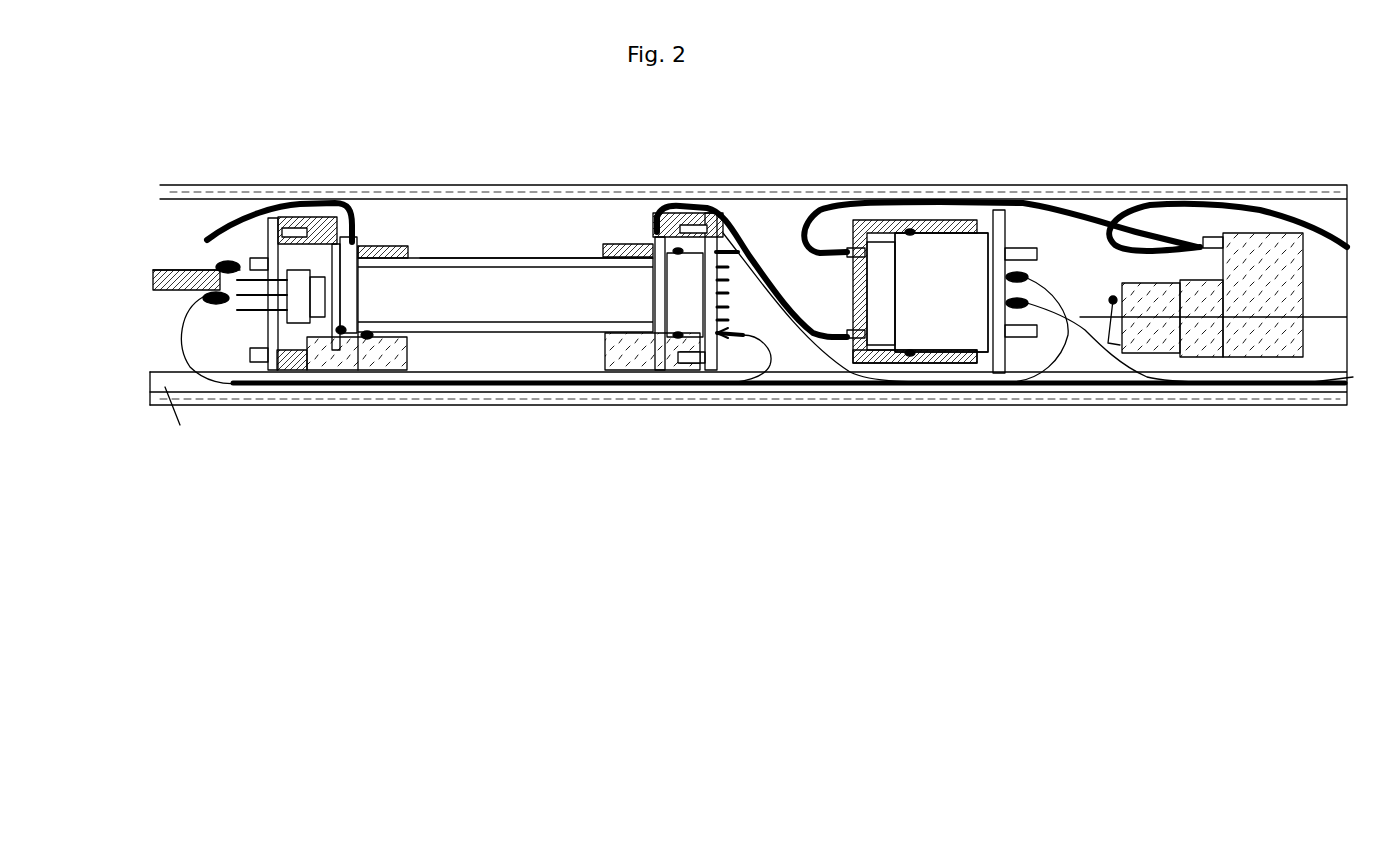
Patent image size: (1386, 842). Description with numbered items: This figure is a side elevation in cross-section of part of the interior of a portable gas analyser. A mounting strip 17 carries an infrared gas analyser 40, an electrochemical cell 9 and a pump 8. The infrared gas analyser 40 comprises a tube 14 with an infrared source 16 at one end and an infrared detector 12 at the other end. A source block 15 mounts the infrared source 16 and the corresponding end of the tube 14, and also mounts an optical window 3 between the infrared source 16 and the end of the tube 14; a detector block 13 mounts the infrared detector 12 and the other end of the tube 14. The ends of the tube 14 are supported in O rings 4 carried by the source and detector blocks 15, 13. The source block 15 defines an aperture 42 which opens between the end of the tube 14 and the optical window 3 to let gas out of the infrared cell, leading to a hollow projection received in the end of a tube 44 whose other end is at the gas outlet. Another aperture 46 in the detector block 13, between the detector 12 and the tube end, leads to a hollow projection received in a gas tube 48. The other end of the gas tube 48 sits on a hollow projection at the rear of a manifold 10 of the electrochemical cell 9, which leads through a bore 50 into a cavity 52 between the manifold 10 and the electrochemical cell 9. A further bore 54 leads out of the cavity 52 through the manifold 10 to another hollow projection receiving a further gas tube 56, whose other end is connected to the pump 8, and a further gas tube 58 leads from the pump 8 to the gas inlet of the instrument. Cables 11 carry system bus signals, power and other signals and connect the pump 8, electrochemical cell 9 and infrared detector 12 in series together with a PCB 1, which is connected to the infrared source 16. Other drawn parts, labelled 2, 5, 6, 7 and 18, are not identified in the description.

The PCB 1 is at (155, 177).
The mounting plate 2 is at (272, 262).
The optical window 3 is at (313, 213).
The O rings 4 is at (640, 250).
The tubular housing 5 is at (517, 187).
The second electronics unit 6 is at (848, 200).
The second circuit module 7 is at (1003, 223).
The pump 8 is at (1220, 357).
The electrochemical cell 9 is at (985, 353).
The manifold 10 is at (930, 363).
The cables 11 is at (848, 383).
The infrared detector 12 is at (693, 337).
The detector block 13 is at (642, 375).
The tube 14 is at (510, 332).
The source block 15 is at (392, 367).
The infrared source 16 is at (297, 323).
The mounting strip 17 is at (170, 395).
The connecting wire 18 is at (270, 358).
The infrared gas analyser 40 is at (577, 258).
The aperture 42 is at (370, 213).
The tube 44 is at (317, 213).
The aperture 46 is at (662, 268).
The gas tube 48 is at (740, 213).
The bore 50 is at (853, 328).
The cavity 52 is at (880, 300).
The bore 54 is at (848, 257).
The gas tube 56 is at (940, 197).
The gas tube 58 is at (1230, 197).